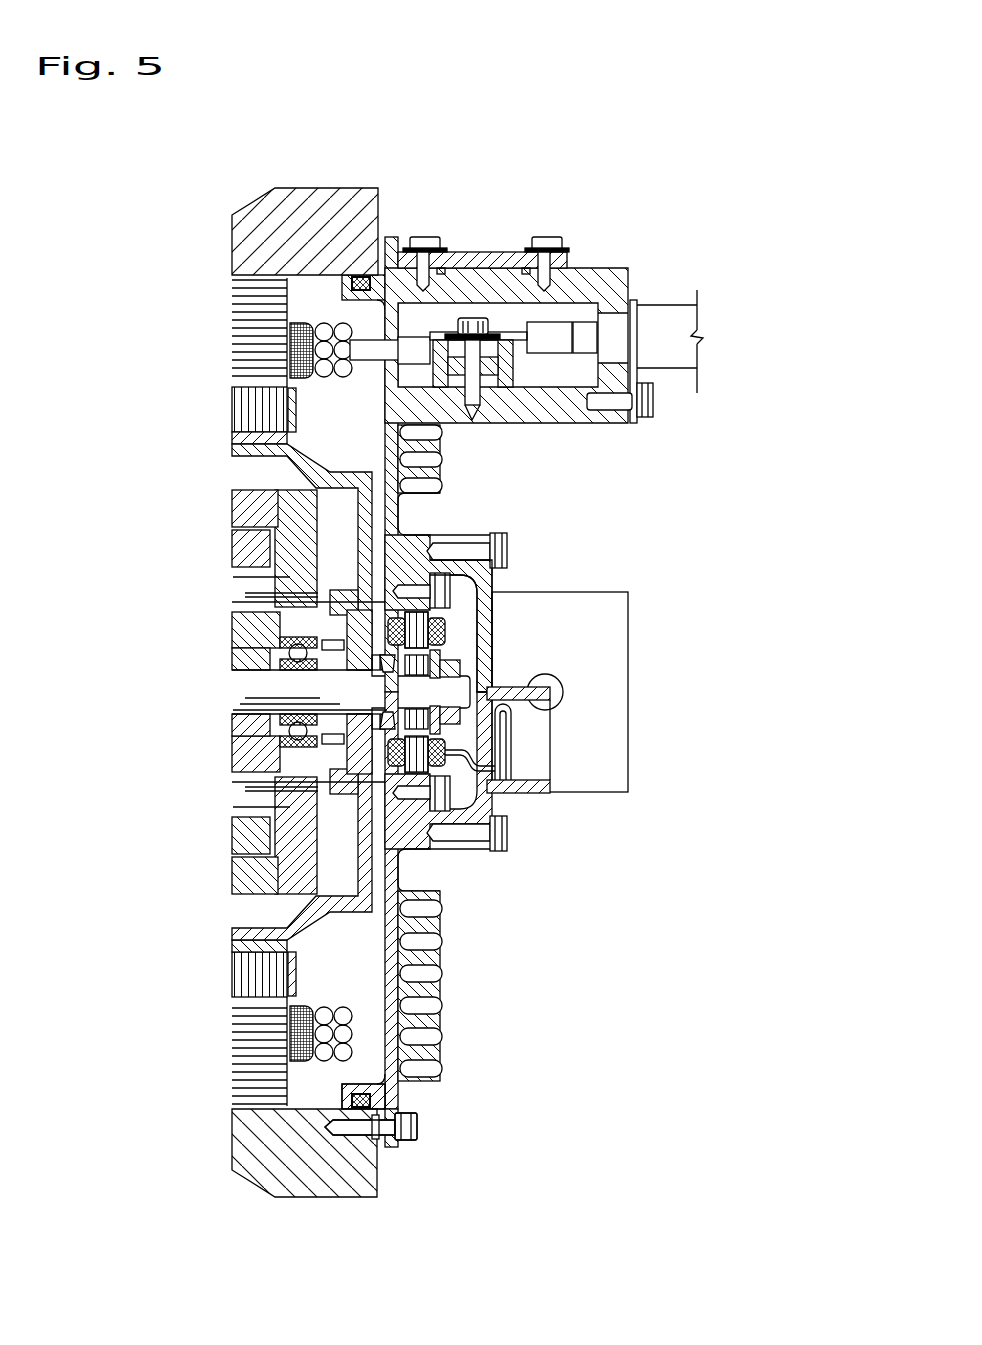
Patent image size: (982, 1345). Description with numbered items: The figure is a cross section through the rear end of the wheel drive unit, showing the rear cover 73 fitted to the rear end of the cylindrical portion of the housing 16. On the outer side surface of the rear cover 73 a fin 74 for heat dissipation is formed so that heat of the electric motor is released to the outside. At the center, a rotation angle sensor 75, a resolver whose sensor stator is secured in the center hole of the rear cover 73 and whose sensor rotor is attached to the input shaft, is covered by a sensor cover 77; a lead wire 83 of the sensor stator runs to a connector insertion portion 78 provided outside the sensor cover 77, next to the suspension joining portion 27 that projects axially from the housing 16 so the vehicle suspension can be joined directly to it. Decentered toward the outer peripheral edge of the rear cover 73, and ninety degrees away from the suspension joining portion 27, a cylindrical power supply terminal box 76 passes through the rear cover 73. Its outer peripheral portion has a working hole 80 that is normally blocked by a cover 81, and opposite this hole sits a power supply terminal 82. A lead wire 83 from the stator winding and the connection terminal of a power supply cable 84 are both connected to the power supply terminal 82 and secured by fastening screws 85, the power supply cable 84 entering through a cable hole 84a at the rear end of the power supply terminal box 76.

The housing 16 is at (302, 210).
The lead wire 83 is at (367, 350).
The fastening screw 85 is at (466, 318).
The working hole 80 is at (513, 290).
The cover 81 is at (547, 236).
The power supply terminal box 76 is at (591, 268).
The power supply cable 84 is at (653, 323).
The cable hole 84a is at (617, 360).
The power supply terminal 82 is at (505, 365).
The sensor cover 77 is at (483, 633).
The rotation angle sensor 75 is at (445, 652).
The suspension joining portion 27 is at (597, 673).
The connector insertion portion 78 is at (540, 793).
The fin 74 is at (427, 968).
The rear cover 73 is at (387, 1086).